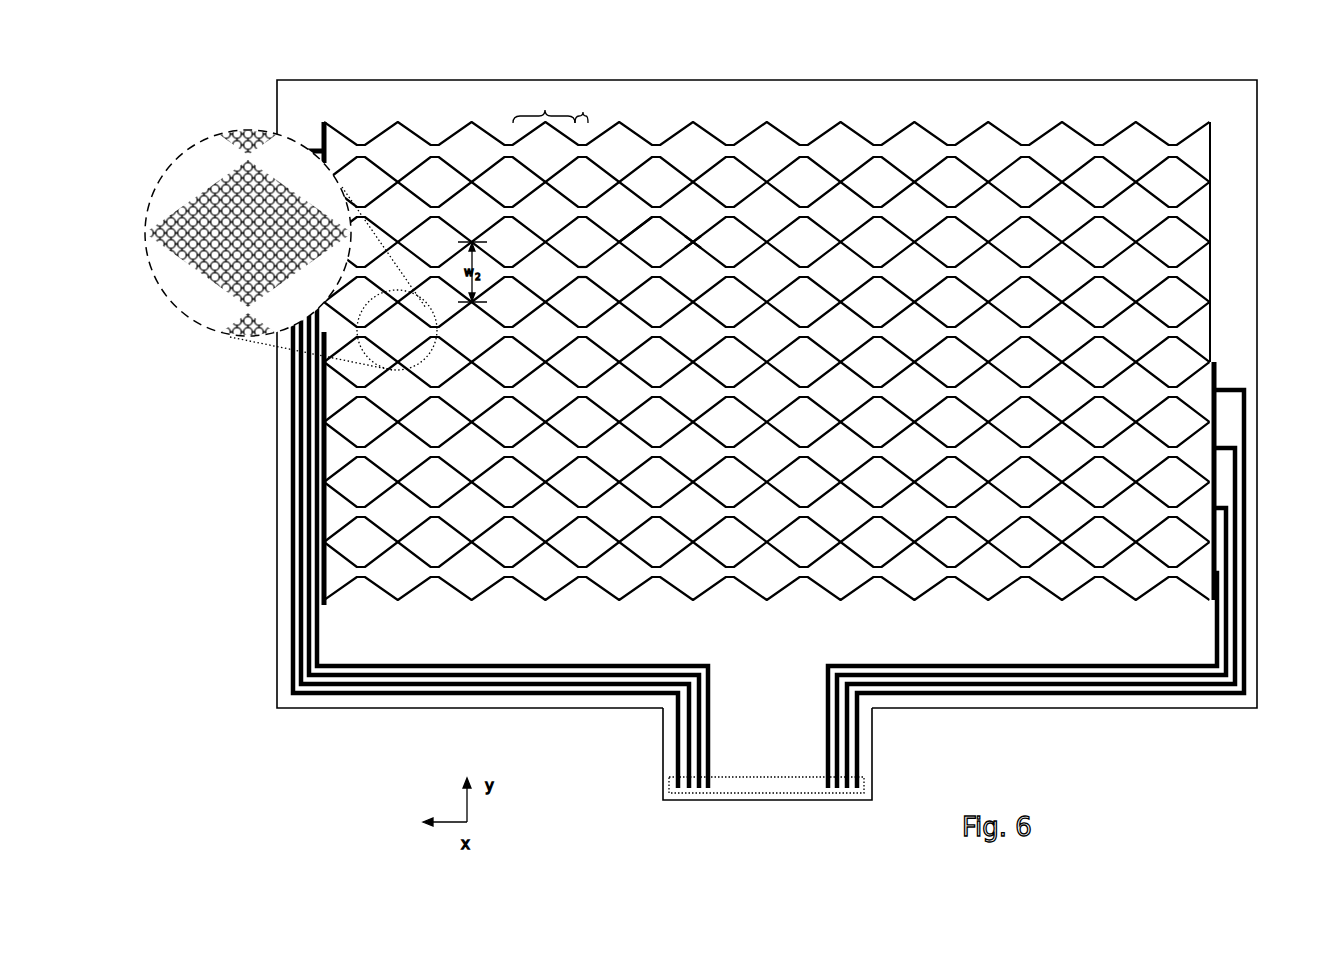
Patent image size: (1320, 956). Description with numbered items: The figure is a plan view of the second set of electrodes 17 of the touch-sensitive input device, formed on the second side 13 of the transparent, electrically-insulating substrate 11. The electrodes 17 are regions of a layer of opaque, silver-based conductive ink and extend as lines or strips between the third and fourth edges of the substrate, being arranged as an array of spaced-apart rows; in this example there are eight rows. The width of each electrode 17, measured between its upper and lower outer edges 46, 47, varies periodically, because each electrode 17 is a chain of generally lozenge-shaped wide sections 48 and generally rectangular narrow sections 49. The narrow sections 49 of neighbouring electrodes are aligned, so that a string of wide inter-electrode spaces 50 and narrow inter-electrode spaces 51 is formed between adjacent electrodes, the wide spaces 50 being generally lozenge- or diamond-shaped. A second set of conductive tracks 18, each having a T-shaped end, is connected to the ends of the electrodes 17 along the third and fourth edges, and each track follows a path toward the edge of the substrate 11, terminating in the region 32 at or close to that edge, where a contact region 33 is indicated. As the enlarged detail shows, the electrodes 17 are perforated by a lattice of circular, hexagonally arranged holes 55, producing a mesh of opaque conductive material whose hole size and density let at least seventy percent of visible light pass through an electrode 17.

The substrate 11 is at (662, 90).
The second side 13 is at (737, 117).
The second set of electrodes 17 is at (1203, 157).
The second set of conductive tracks 18 is at (1247, 407).
The edge region 32 is at (766, 800).
The contact area 33 is at (806, 793).
The outer edge 46 is at (584, 266).
The outer edge 47 is at (583, 278).
The wide section 48 is at (544, 105).
The narrow section 49 is at (583, 106).
The wide inter-electrode space 50 is at (641, 229).
The narrow inter-electrode space 51 is at (693, 247).
The holes 55 is at (198, 268).